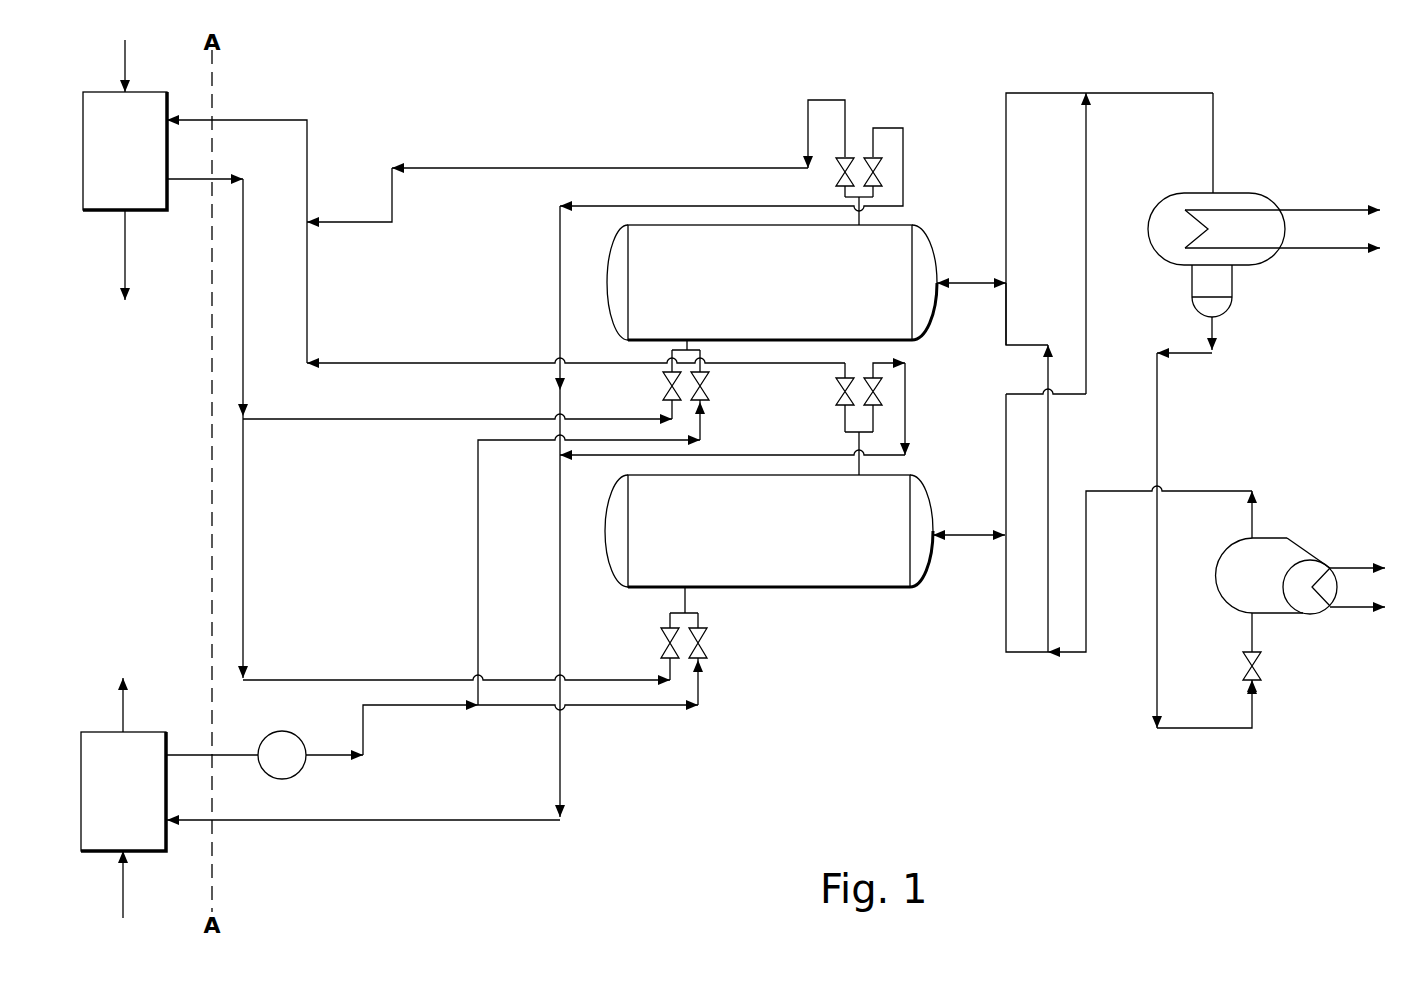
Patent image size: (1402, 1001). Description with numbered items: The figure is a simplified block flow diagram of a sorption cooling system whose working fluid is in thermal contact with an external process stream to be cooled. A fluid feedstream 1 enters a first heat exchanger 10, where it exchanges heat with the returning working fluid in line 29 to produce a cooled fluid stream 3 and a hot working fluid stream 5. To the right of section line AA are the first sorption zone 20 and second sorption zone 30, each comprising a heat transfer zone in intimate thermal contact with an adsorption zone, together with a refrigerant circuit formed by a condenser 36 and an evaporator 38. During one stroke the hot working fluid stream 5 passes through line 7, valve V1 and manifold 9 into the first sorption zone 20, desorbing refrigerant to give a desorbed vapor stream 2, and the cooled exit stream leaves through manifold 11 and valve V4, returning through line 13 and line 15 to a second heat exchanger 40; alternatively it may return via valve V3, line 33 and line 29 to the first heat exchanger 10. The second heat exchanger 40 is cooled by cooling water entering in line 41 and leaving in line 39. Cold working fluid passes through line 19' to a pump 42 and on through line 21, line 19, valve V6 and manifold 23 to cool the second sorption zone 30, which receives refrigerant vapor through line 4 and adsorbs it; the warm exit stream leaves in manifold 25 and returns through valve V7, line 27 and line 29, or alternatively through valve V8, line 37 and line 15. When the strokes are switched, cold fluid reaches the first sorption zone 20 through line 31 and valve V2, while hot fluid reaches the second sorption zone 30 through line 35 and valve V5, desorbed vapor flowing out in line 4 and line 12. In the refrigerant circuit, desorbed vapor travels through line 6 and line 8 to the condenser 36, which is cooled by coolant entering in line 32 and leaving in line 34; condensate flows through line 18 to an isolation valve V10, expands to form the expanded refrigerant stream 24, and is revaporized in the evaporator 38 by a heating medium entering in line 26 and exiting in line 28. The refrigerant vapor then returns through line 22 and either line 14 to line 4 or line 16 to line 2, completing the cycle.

The fluid feedstream 1 is at (126, 55).
The desorbed vapor stream 2 is at (962, 282).
The cooled fluid stream 3 is at (126, 241).
The line 4 is at (980, 533).
The hot working fluid stream 5 is at (244, 303).
The line 6 is at (1007, 178).
The line 7 is at (353, 405).
The line 8 is at (1150, 93).
The manifold 9 is at (672, 350).
The first heat exchanger 10 is at (125, 151).
The manifold 11 is at (843, 197).
The line 12 is at (1087, 200).
The line 13 is at (904, 152).
The line 14 is at (1006, 652).
The line 15 is at (350, 822).
The line 16 is at (1007, 323).
The line 18 is at (1214, 340).
The line 19 is at (392, 752).
The line 19' is at (212, 780).
The first sorption zone 20 is at (772, 282).
The line 21 is at (638, 707).
The line 22 is at (1212, 491).
The manifold 23 is at (700, 616).
The expanded refrigerant stream 24 is at (1254, 633).
The manifold 25 is at (845, 432).
The line 26 is at (1342, 610).
The line 27 is at (308, 283).
The line 28 is at (1352, 567).
The line 29 is at (240, 121).
The second sorption zone 30 is at (769, 531).
The line 31 is at (702, 436).
The line 32 is at (1322, 249).
The line 33 is at (662, 150).
The line 34 is at (1312, 209).
The line 35 is at (408, 678).
The condenser 36 is at (1232, 193).
The line 37 is at (600, 457).
The evaporator 38 is at (1300, 538).
The line 39 is at (124, 712).
The second heat exchanger 40 is at (123, 791).
The line 41 is at (124, 890).
The pump 42 is at (300, 737).
The valve V1 is at (665, 386).
The valve V2 is at (708, 386).
The valve V3 is at (847, 172).
The valve V4 is at (873, 172).
The valve V5 is at (660, 643).
The valve V6 is at (705, 648).
The valve V7 is at (840, 388).
The valve V8 is at (866, 374).
The isolation valve V10 is at (1262, 672).